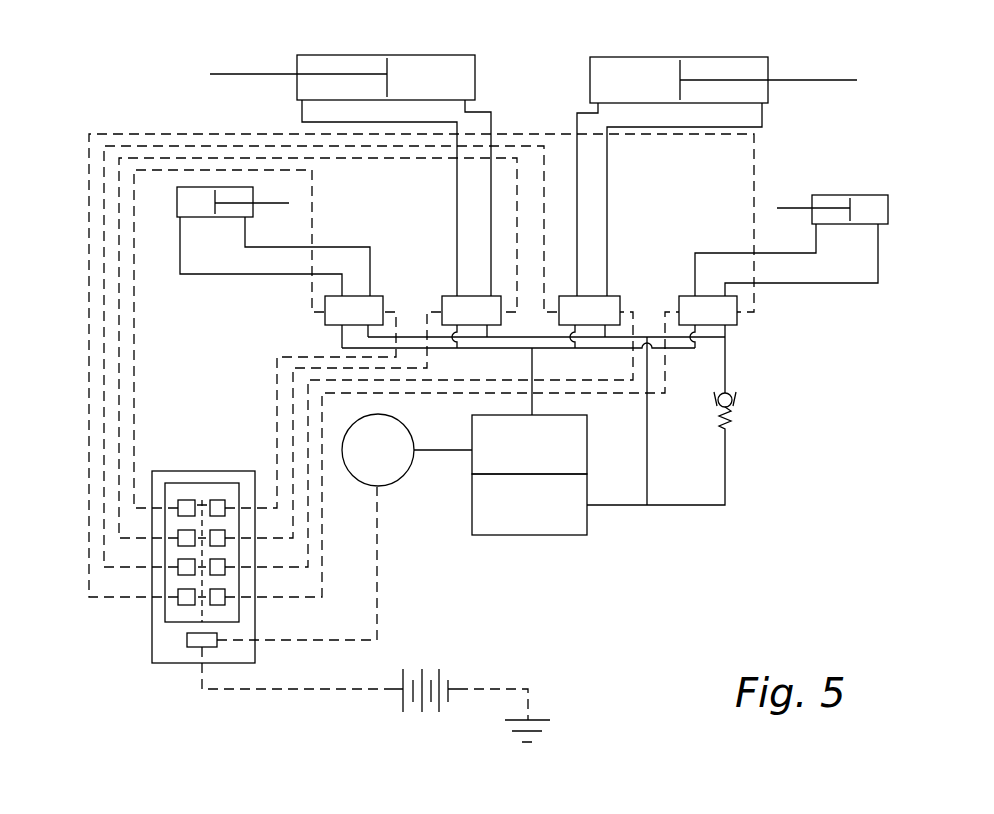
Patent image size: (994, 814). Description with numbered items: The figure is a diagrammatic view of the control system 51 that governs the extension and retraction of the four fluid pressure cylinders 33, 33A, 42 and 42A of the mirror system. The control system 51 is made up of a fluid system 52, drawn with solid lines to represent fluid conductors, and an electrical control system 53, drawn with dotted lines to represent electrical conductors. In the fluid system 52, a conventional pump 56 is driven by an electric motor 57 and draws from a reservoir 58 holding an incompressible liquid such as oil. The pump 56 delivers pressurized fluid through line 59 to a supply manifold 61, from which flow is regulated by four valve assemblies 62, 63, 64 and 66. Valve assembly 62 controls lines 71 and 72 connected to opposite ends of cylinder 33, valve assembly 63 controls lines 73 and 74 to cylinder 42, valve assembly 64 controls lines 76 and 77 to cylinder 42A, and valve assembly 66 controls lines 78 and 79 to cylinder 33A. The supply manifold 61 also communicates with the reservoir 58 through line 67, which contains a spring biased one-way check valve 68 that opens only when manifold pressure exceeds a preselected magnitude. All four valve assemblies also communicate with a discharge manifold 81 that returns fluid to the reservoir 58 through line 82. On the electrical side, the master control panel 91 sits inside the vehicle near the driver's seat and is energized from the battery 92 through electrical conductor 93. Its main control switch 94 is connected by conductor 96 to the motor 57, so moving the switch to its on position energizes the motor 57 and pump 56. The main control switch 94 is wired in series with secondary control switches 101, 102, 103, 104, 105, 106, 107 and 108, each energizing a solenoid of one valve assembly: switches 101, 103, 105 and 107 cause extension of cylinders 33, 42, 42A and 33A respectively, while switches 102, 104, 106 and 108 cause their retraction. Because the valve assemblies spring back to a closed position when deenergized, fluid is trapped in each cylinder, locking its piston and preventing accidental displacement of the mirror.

The fluid pressure cylinder 33 is at (240, 189).
The fluid pressure cylinder 33A is at (881, 188).
The fluid pressure cylinder 42 is at (406, 45).
The fluid pressure cylinder 42A is at (650, 33).
The control system 51 is at (606, 608).
The fluid system 52 is at (708, 518).
The electrical control system 53 is at (81, 391).
The pump 56 is at (575, 448).
The electric motor 57 is at (394, 481).
The reservoir 58 is at (563, 527).
The line 59 is at (532, 410).
The supply manifold 61 is at (688, 349).
The valve assembly 62 is at (338, 312).
The valve assembly 63 is at (448, 298).
The valve assembly 64 is at (608, 300).
The valve assembly 66 is at (725, 318).
The line 67 is at (725, 465).
The spring biased one-way check valve 68 is at (741, 394).
The line 71 is at (243, 277).
The line 72 is at (327, 247).
The line 73 is at (457, 222).
The line 74 is at (491, 210).
The line 76 is at (577, 212).
The line 77 is at (610, 190).
The line 78 is at (720, 253).
The line 79 is at (797, 284).
The discharge manifold 81 is at (537, 340).
The line 82 is at (648, 468).
The master control panel 91 is at (155, 656).
The battery 92 is at (437, 705).
The electrical conductor 93 is at (315, 690).
The main control switch 94 is at (198, 647).
The electrical conductor 96 is at (377, 565).
The secondary control switch 101 is at (178, 510).
The secondary control switch 102 is at (225, 510).
The secondary control switch 103 is at (178, 540).
The secondary control switch 104 is at (225, 540).
The secondary control switch 105 is at (178, 568).
The secondary control switch 106 is at (225, 570).
The secondary control switch 107 is at (178, 598).
The secondary control switch 108 is at (225, 600).